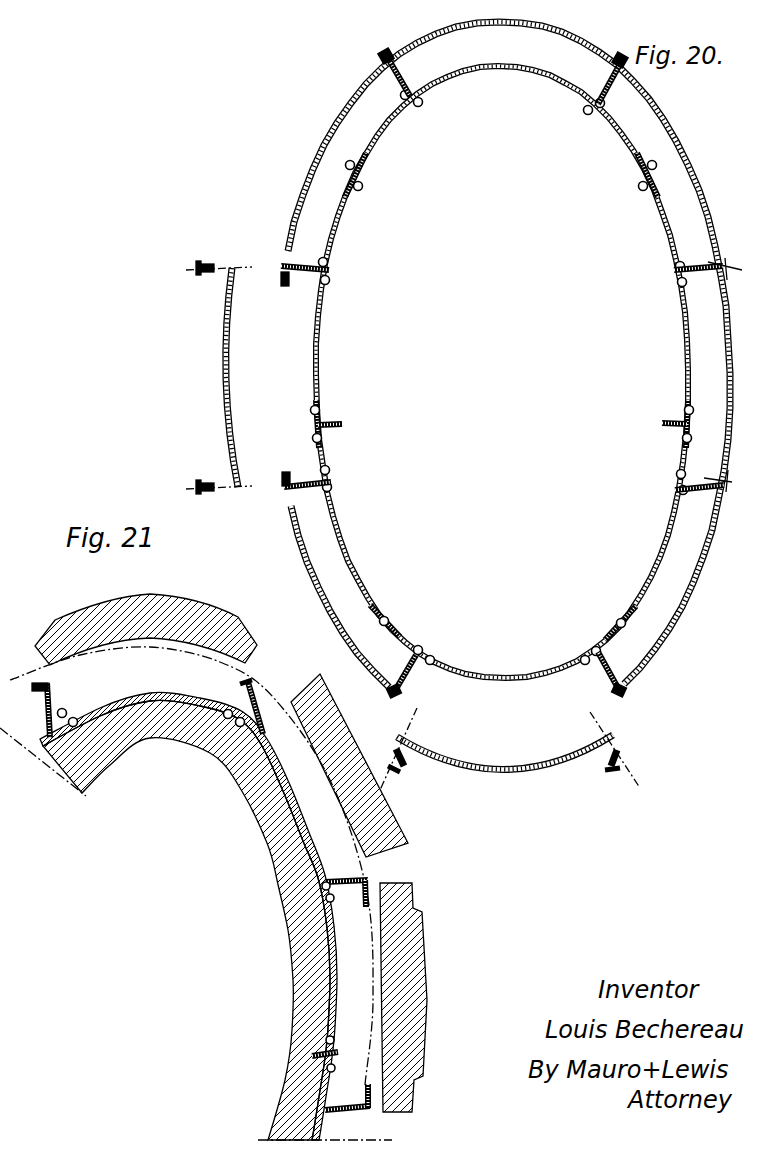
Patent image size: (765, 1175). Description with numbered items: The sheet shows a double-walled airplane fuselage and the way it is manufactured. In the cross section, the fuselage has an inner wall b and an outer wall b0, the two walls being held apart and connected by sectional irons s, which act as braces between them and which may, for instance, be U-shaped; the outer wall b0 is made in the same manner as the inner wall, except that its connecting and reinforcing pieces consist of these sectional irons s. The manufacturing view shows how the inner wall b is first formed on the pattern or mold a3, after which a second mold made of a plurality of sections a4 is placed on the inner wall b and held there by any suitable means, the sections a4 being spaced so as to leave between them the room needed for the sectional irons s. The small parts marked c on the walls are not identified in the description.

In FIG. 21, the pattern or mold a3 is at (278, 868).
In FIG. 21, the sections of second mold or pattern a4 is at (192, 610).
In FIG. 20, the inner wall b is at (344, 206).
In FIG. 21, the inner wall b is at (132, 700).
In FIG. 20, the outer wall b0 is at (340, 106).
In FIG. 20, the clamp plate c is at (662, 425).
In FIG. 20, the sectional irons s is at (396, 84).
In FIG. 21, the sectional irons s is at (46, 688).